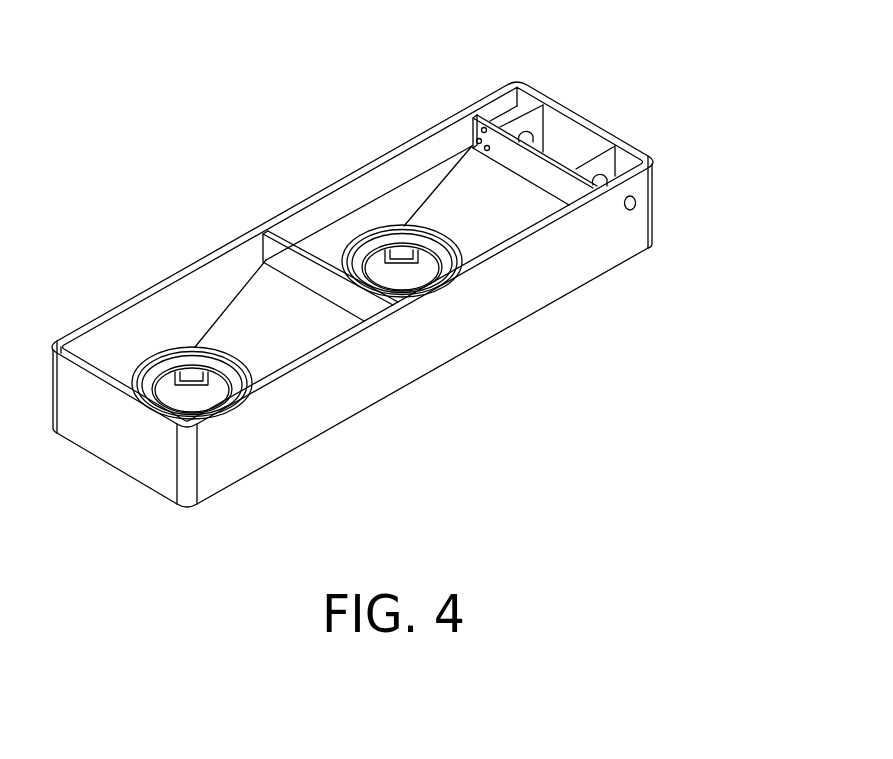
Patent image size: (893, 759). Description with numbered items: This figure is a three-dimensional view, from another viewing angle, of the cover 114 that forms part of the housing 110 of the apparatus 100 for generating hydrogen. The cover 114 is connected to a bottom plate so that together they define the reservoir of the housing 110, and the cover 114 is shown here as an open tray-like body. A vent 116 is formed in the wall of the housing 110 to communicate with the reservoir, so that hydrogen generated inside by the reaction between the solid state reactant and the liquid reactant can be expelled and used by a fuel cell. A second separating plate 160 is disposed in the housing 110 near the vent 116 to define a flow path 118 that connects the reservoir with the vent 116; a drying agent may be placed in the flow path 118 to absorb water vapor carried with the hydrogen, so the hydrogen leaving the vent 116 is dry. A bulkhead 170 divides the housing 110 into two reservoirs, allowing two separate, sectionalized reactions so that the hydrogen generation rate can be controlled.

The apparatus for generating hydrogen 100 is at (395, 257).
The housing 110 is at (393, 257).
The cover 114 is at (573, 279).
The vent 116 is at (636, 202).
The flow path 118 is at (555, 139).
The second separating plate 160 is at (497, 147).
The bulkhead 170 is at (295, 263).